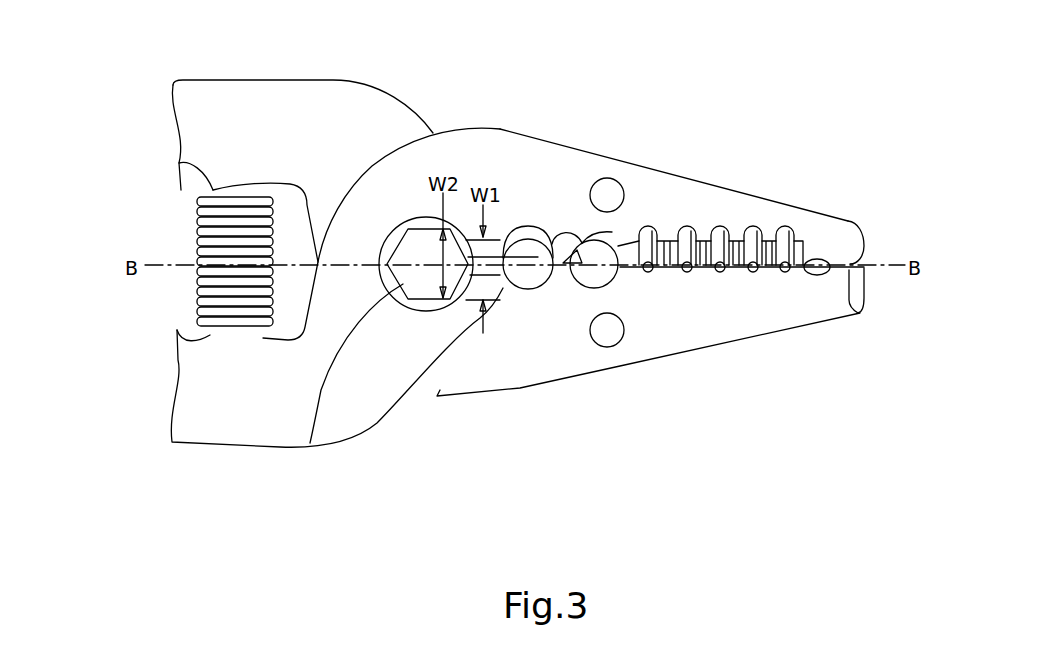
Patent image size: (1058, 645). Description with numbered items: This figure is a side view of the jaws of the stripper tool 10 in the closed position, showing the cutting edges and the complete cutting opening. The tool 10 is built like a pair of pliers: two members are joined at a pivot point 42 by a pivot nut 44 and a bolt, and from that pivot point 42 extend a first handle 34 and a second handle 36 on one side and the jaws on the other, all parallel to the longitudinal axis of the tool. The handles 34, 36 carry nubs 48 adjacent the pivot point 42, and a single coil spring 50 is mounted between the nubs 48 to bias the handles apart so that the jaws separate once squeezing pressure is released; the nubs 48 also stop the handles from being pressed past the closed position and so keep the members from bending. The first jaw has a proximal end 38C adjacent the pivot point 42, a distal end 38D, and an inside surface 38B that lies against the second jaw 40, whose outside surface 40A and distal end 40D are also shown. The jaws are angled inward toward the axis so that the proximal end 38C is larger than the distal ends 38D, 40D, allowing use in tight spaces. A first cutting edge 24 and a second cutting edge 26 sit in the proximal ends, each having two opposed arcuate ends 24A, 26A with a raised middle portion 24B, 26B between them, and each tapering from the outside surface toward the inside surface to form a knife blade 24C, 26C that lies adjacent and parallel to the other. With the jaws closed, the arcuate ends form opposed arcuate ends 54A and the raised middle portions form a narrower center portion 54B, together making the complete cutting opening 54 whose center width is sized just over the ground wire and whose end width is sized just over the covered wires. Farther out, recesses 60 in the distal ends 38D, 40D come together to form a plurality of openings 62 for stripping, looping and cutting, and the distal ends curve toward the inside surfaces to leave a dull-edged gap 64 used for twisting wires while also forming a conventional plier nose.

The stripper tool 10 is at (228, 36).
The first cutting edge 24 is at (524, 289).
The arcuate end of first cutting edge 24A is at (505, 288).
The raised middle portion of first cutting edge 24B is at (551, 290).
The knife blade of first cutting edge 24C is at (610, 233).
The second cutting edge 26 is at (522, 233).
The arcuate end of second cutting edge 26A is at (520, 227).
The raised middle portion of second cutting edge 26B is at (556, 250).
The knife blade of second cutting edge 26C is at (556, 290).
The first handle 34 is at (303, 92).
The second handle 36 is at (203, 423).
The inside surface of first jaw 38B is at (797, 322).
The proximal end of first jaw 38C is at (437, 398).
The distal end of first jaw 38D is at (866, 300).
The second jaw 40 is at (460, 147).
The outside surface of second jaw 40A is at (750, 228).
The distal end of second jaw 40D is at (865, 235).
The pivot point 42 is at (390, 240).
The pivot nut 44 is at (310, 443).
The nubs 48 is at (178, 170).
The coil spring 50 is at (195, 252).
The complete cutting opening 54 is at (556, 290).
The opposed arcuate ends of cutting opening 54A is at (521, 290).
The center portion of cutting opening 54B is at (527, 291).
The recesses 60 is at (683, 237).
The openings 62 is at (720, 273).
The gap 64 is at (815, 257).